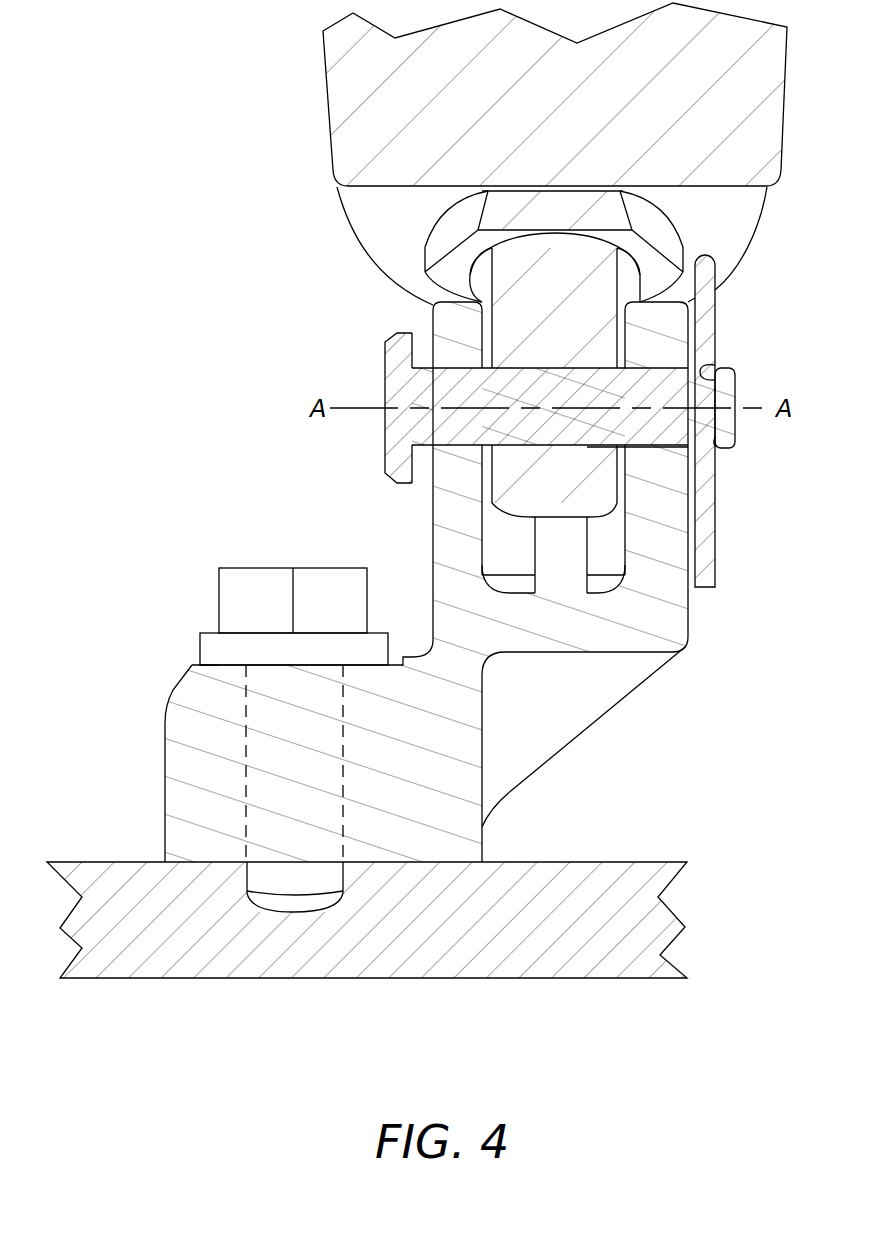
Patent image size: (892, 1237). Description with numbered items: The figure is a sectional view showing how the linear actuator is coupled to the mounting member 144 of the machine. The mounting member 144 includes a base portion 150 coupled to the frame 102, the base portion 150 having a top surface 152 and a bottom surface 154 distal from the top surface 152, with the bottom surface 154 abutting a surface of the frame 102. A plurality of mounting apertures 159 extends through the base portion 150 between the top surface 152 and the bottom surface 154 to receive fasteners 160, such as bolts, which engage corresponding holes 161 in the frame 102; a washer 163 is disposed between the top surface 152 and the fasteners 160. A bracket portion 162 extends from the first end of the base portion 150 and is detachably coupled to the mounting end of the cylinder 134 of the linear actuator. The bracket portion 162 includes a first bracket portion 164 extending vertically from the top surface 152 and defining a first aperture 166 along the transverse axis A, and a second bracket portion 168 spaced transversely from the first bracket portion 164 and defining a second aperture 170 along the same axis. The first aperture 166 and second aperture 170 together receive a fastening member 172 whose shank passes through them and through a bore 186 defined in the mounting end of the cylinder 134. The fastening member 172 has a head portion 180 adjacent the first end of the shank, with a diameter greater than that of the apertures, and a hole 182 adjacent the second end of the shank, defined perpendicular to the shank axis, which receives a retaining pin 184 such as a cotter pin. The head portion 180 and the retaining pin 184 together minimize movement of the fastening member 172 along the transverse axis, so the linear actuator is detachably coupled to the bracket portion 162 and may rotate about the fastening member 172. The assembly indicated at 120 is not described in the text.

The frame 102 is at (367, 910).
The clamp assembly 120 is at (172, 200).
The cylinder 134 is at (323, 78).
The mounting member 144 is at (233, 758).
The base portion 150 is at (163, 737).
The top surface 152 is at (203, 642).
The bottom surface 154 is at (183, 862).
The mounting apertures 159 is at (243, 728).
The fasteners 160 is at (252, 567).
The holes 161 is at (343, 893).
The bracket portion 162 is at (489, 574).
The washer 163 is at (218, 663).
The first bracket portion 164 is at (433, 323).
The first aperture 166 is at (557, 410).
The second bracket portion 168 is at (697, 322).
The second aperture 170 is at (643, 368).
The fastening member 172 is at (385, 345).
The head portion 180 is at (386, 438).
The hole 182 is at (700, 368).
The retaining pin 184 is at (715, 548).
The bore 186 is at (587, 447).